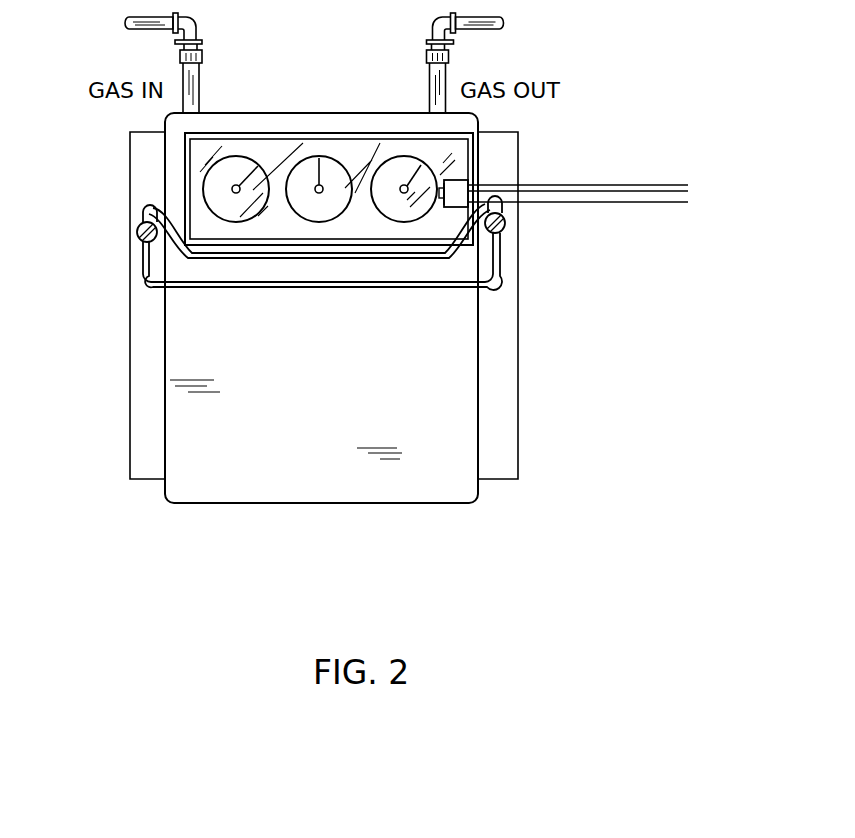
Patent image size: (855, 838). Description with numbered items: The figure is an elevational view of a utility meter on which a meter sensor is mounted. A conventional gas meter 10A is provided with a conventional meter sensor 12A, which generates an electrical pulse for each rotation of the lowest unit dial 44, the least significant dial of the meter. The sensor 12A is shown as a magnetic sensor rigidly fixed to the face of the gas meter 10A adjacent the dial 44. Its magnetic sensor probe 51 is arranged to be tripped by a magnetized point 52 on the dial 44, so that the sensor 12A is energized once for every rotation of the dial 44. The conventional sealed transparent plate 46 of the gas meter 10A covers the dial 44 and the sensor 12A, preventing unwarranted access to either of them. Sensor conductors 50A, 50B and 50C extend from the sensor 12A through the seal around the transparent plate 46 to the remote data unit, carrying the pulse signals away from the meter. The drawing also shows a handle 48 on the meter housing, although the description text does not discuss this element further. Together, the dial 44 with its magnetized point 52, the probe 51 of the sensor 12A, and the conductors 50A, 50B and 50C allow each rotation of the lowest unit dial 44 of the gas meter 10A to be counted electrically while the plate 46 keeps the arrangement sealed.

The gas meter 10A is at (180, 350).
The meter sensor 12A is at (463, 180).
The lowest unit dial 44 is at (388, 222).
The sealed transparent plate 46 is at (195, 150).
The carrying handle 48 is at (143, 263).
The sensor conductor 50A is at (588, 185).
The sensor conductor 50B is at (666, 190).
The sensor conductor 50C is at (657, 202).
The magnetic sensor probe 51 is at (440, 206).
The magnetized point 52 is at (413, 172).